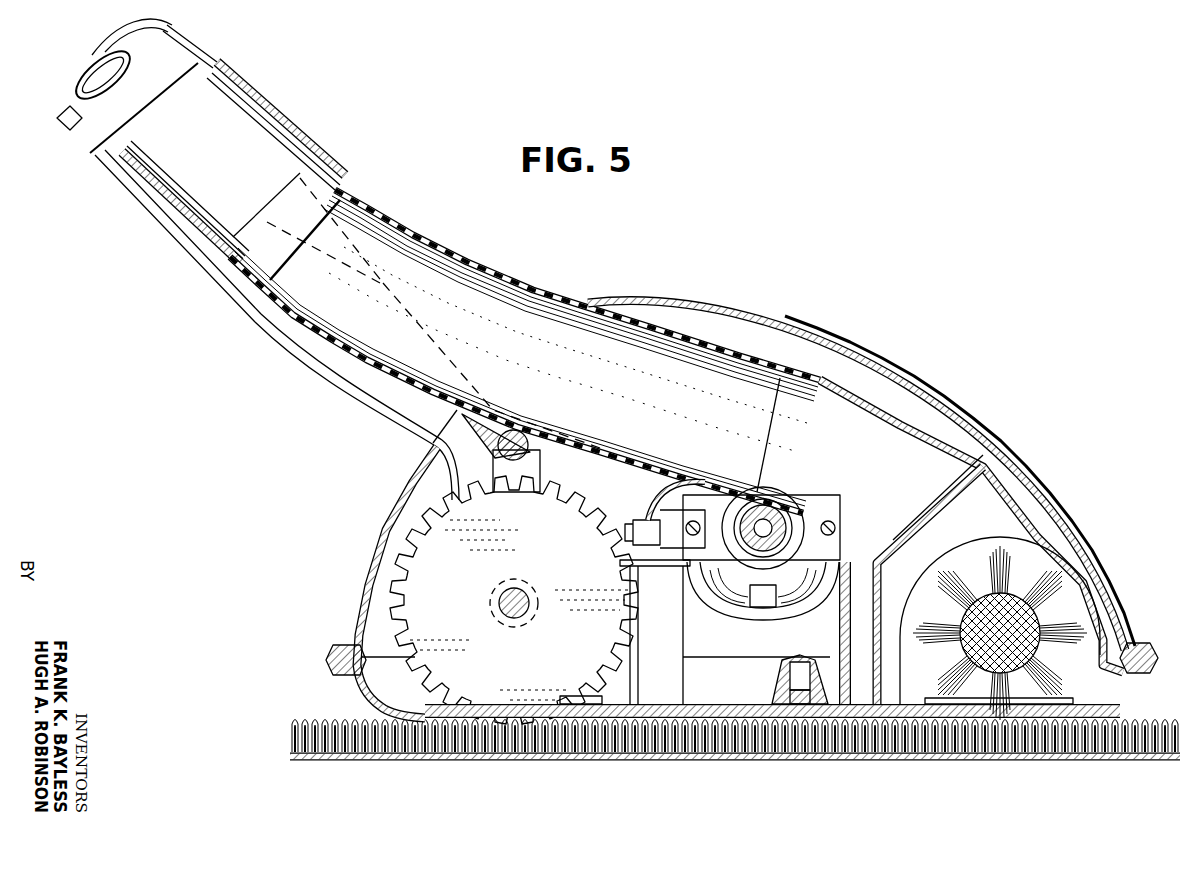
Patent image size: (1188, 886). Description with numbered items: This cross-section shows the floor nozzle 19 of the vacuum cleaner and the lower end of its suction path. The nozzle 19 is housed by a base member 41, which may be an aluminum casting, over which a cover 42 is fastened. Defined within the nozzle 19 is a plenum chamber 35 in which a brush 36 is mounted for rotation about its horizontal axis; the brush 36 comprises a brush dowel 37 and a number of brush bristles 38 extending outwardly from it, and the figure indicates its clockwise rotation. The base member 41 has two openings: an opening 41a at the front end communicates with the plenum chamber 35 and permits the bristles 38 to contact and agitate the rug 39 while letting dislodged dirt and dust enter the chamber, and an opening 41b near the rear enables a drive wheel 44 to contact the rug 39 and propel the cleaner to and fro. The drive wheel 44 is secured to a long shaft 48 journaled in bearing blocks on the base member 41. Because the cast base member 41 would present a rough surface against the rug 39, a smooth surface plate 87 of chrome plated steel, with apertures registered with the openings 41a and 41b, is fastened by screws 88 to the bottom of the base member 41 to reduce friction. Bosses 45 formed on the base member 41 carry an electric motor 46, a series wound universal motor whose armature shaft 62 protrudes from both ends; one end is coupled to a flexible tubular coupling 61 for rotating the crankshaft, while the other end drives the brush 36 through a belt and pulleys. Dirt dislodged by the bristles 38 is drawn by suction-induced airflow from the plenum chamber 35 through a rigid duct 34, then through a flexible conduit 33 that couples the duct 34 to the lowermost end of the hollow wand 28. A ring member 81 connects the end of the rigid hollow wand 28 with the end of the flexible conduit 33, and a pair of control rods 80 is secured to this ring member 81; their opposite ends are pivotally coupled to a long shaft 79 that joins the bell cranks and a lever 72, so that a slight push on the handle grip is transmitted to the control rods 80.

The nozzle 19 is at (798, 318).
The hollow wand 28 is at (78, 80).
The ring member 81 is at (260, 105).
The flexible conduit 33 is at (395, 230).
The control rods 80 is at (383, 292).
The cover 42 is at (736, 311).
The rigid duct 34 is at (856, 413).
The rug 39 is at (322, 702).
The lever 72 is at (502, 472).
The long shaft 79 is at (532, 446).
The drive wheel 44 is at (483, 577).
The long shaft 48 is at (524, 593).
The electric motor 46 is at (692, 507).
The armature shaft 62 is at (770, 527).
The flexible tubular coupling 61 is at (770, 495).
The bosses 45 is at (655, 643).
The screws 88 is at (790, 660).
The base member 41 is at (735, 704).
The opening 41b is at (590, 703).
The opening 41a is at (1022, 730).
The smooth surface plate 87 is at (773, 718).
The plenum chamber 35 is at (1073, 602).
The brush dowel 37 is at (977, 623).
The brush 36 is at (1053, 646).
The brush bristles 38 is at (937, 637).